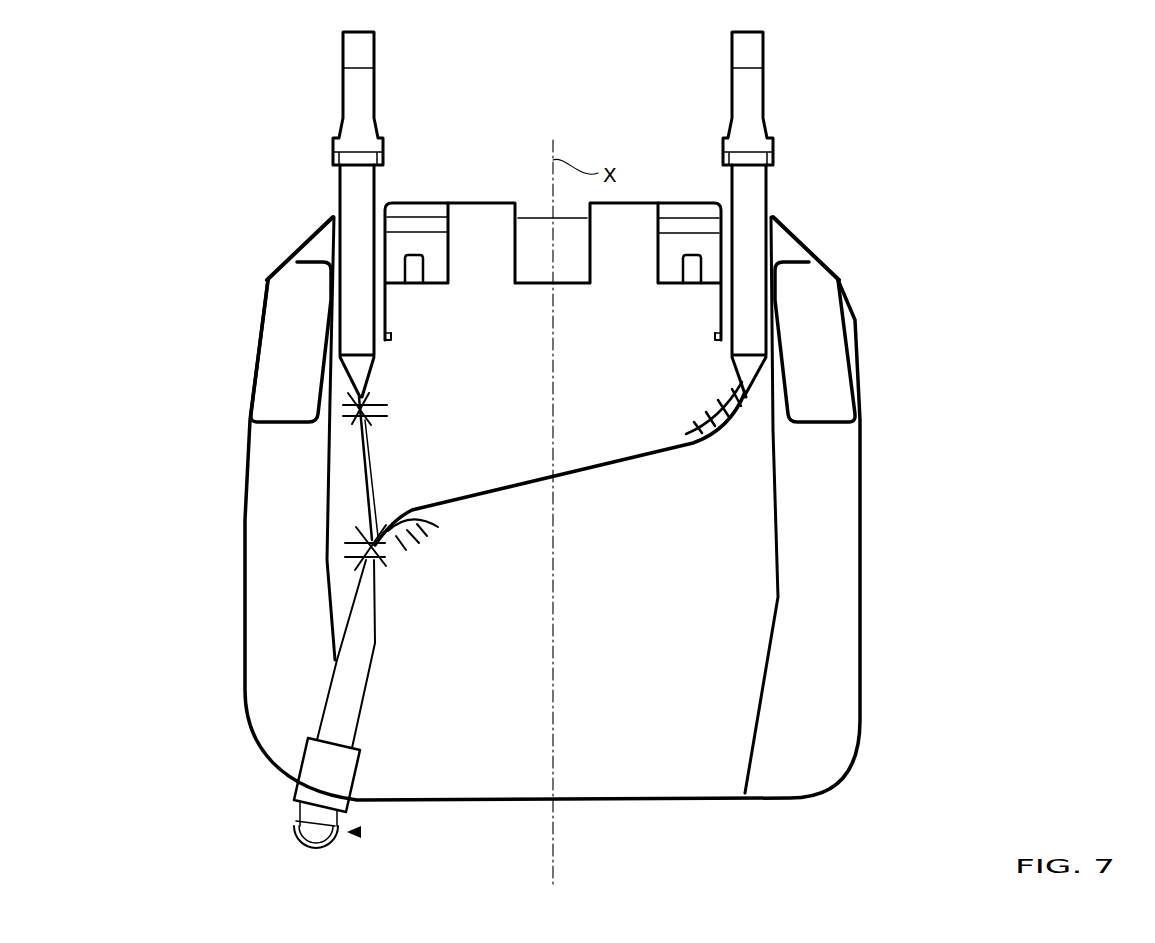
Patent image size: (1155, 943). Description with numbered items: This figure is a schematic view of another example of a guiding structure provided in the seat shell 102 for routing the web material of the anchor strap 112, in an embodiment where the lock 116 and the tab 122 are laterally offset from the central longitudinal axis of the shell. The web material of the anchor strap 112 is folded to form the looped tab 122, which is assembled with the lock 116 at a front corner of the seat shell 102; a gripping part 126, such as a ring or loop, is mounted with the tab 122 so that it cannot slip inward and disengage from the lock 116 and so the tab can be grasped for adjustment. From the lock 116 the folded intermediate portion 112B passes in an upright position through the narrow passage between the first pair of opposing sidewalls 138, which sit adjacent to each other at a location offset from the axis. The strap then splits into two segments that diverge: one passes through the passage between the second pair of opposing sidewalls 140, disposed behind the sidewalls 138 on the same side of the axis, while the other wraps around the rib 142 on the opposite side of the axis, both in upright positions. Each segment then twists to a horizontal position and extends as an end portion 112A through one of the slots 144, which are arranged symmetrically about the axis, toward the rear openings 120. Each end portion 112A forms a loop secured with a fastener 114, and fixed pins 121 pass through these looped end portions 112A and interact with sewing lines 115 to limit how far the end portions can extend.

The seat shell 102 is at (865, 608).
The anchor strap 112 is at (609, 489).
The end portions 112A is at (348, 302).
The intermediate portion 112B is at (348, 685).
The fasteners 114 is at (362, 85).
The sewing lines 115 is at (325, 381).
The lock 116 is at (318, 765).
The rear openings 120 is at (333, 217).
The fixed pins 121 is at (407, 292).
The looped tab 122 is at (361, 832).
The gripping part 126 is at (308, 853).
The first pair of opposing sidewalls 138 is at (365, 578).
The second pair of opposing sidewalls 140 is at (362, 440).
The rib 142 is at (733, 430).
The slots 144 is at (413, 258).